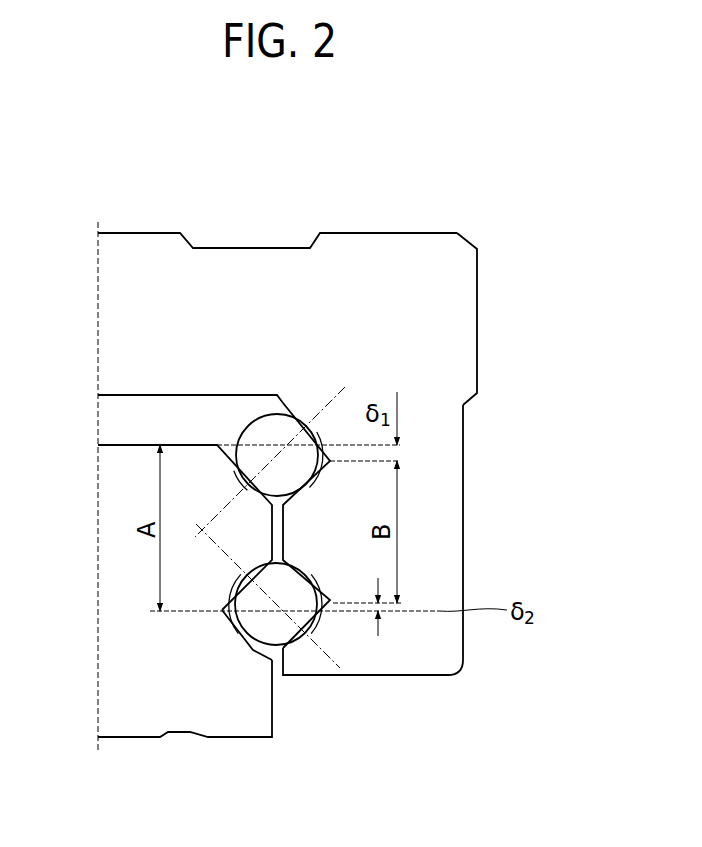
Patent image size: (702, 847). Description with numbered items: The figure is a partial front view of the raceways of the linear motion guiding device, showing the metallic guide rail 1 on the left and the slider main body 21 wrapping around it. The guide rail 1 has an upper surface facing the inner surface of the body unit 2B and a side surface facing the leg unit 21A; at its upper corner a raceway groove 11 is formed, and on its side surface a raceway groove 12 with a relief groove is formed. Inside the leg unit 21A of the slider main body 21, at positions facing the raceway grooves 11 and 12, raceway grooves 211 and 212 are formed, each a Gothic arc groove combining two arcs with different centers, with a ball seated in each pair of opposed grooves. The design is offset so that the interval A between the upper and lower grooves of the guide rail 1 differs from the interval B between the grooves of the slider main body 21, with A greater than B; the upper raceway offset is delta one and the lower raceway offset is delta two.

The guide rail 1 is at (115, 667).
The raceway groove 11 is at (237, 441).
The raceway groove 12 is at (253, 650).
The body unit 2B is at (213, 347).
The slider main body 21 is at (460, 224).
The leg unit 21A is at (438, 520).
The raceway groove 211 is at (320, 489).
The raceway groove 212 is at (323, 593).